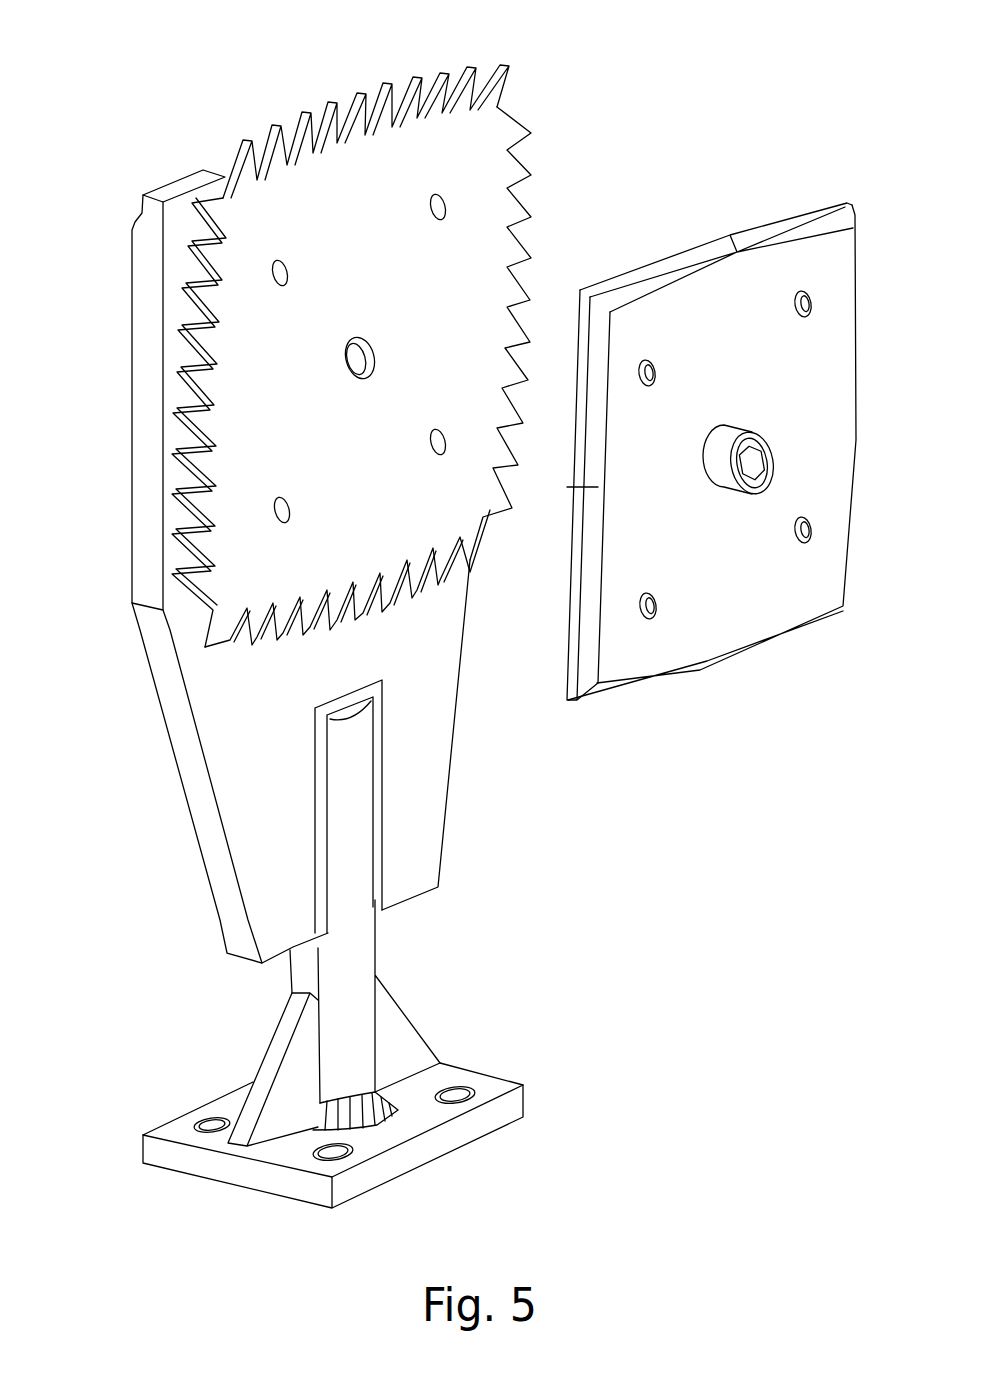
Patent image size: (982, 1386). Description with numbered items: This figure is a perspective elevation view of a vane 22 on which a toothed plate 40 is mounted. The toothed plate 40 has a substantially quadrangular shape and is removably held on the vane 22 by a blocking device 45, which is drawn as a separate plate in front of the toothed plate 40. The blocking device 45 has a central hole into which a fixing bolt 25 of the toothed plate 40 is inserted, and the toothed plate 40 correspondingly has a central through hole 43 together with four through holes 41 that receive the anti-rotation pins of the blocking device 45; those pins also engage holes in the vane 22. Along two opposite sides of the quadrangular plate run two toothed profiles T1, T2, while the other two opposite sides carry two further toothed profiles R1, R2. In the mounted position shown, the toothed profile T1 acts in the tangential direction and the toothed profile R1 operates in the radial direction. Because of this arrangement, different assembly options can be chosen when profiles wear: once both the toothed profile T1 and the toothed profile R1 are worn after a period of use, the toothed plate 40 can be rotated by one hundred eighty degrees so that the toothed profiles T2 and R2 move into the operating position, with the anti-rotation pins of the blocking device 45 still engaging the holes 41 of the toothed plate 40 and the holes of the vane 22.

The vane 22 is at (437, 735).
The toothed plate 40 is at (332, 383).
The through holes 41 is at (431, 210).
The central through hole 43 is at (362, 360).
The blocking device 45 is at (727, 620).
The fixing bolt 25 is at (767, 443).
The toothed profile T1 is at (323, 103).
The toothed profile T2 is at (283, 647).
The toothed profile R1 is at (530, 250).
The toothed profile R2 is at (183, 383).